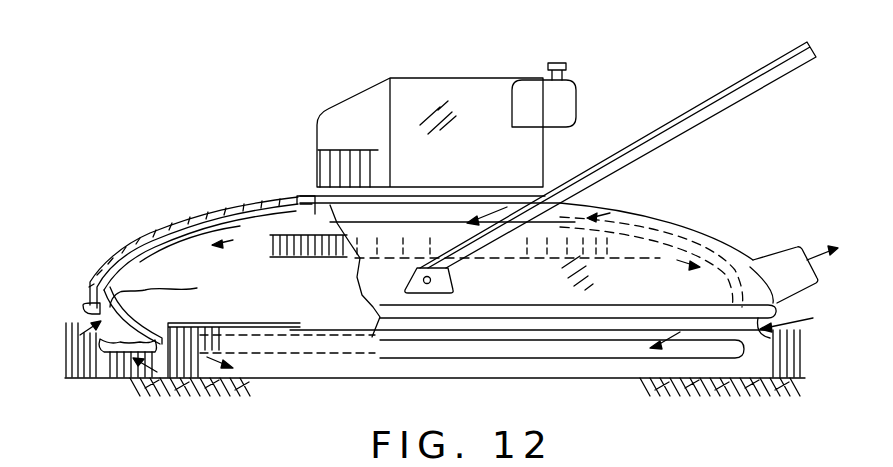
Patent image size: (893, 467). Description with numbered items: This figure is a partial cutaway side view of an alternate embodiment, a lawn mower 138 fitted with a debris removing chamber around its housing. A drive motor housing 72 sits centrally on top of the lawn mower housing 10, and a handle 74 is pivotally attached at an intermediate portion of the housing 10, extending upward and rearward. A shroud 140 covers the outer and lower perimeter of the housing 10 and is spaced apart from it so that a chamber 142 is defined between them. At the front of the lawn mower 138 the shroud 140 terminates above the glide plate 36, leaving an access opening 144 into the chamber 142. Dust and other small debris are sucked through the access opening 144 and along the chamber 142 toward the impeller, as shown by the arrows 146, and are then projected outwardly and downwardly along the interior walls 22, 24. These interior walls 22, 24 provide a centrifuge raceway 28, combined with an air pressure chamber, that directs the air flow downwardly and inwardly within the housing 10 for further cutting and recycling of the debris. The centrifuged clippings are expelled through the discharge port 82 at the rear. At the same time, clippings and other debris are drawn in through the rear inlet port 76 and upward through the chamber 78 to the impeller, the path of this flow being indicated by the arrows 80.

The lawn mower housing 10 is at (236, 207).
The interior wall 22 is at (142, 265).
The interior surface 24 is at (120, 335).
The centrifuge raceway 28 is at (169, 293).
The glide plate 36 is at (106, 368).
The drive motor housing 72 is at (468, 78).
The handle 74 is at (676, 118).
The inlet port 76 is at (566, 339).
The chamber 78 is at (682, 238).
The arrows 80 is at (615, 222).
The delivery port 82 is at (778, 248).
The lawn mower 138 is at (215, 154).
The shroud 140 is at (96, 270).
The chamber 142 is at (201, 229).
The access opening 144 is at (98, 345).
The arrows 146 is at (392, 214).